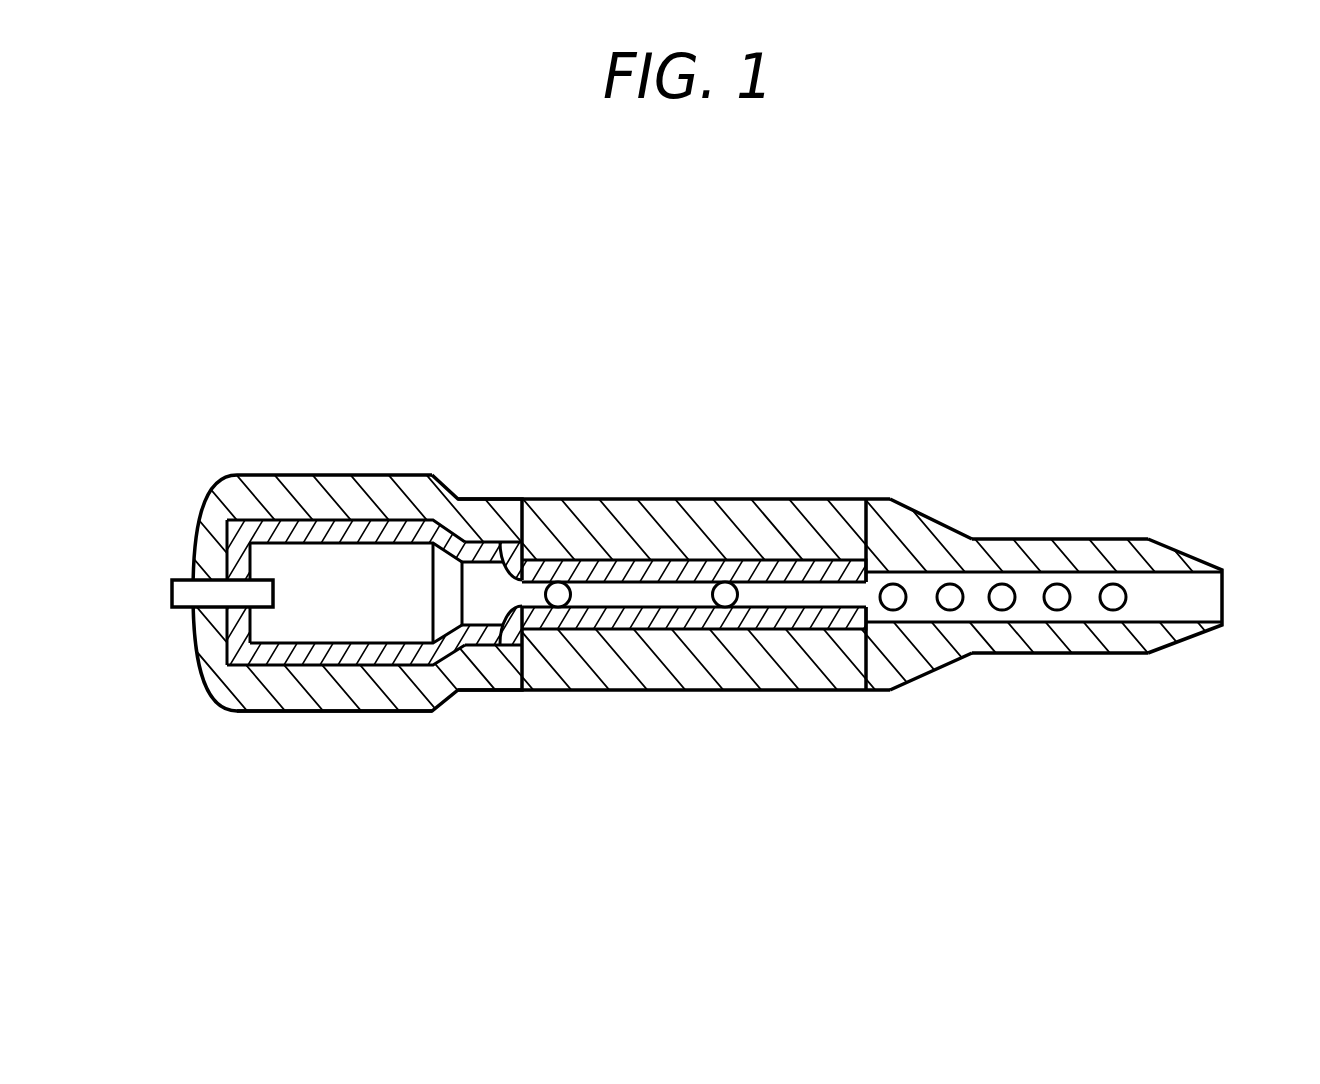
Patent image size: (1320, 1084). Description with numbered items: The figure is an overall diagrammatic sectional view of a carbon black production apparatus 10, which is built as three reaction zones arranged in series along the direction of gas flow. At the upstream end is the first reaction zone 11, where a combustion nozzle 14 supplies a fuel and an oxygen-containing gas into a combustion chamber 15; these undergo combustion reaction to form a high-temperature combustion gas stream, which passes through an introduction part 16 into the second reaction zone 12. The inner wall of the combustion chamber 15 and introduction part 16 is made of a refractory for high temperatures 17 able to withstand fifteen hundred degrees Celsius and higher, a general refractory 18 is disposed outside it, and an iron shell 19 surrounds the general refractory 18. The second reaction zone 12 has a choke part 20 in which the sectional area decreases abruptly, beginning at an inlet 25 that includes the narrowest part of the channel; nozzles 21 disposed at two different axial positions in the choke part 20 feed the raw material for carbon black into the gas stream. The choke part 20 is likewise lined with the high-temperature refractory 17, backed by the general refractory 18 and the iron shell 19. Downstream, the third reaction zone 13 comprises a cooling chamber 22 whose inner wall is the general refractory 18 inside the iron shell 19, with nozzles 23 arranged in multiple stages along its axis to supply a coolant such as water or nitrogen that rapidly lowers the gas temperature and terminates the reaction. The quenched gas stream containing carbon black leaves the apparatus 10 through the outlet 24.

The carbon black production apparatus 10 is at (775, 300).
The first reaction zone 11 is at (347, 663).
The second reaction zone 12 is at (694, 711).
The third reaction zone 13 is at (1064, 658).
The combustion nozzle 14 is at (212, 596).
The combustion chamber 15 is at (352, 603).
The introduction part 16 is at (480, 603).
The refractory for high temperatures 17 is at (390, 520).
The general refractory 18 is at (332, 493).
The iron shell 19 is at (258, 475).
The choke part 20 is at (620, 590).
The nozzle 21 is at (558, 594).
The cooling chamber 22 is at (950, 597).
The nozzle 23 is at (893, 597).
The outlet 24 is at (1236, 586).
The inlet 25 is at (497, 555).